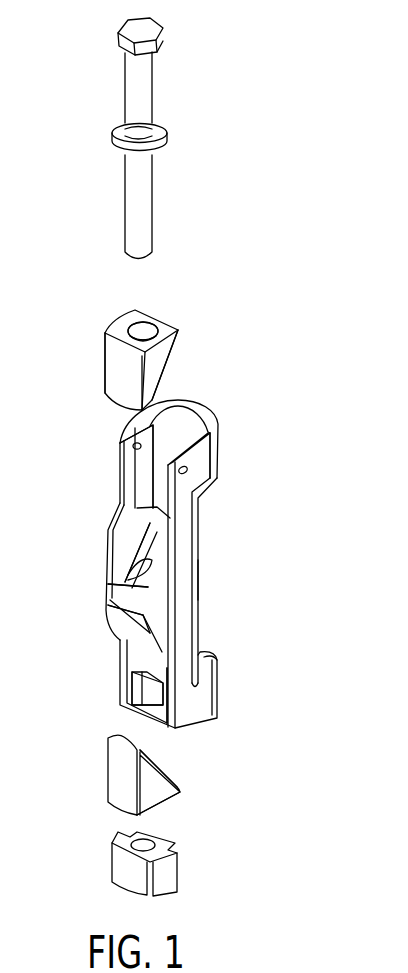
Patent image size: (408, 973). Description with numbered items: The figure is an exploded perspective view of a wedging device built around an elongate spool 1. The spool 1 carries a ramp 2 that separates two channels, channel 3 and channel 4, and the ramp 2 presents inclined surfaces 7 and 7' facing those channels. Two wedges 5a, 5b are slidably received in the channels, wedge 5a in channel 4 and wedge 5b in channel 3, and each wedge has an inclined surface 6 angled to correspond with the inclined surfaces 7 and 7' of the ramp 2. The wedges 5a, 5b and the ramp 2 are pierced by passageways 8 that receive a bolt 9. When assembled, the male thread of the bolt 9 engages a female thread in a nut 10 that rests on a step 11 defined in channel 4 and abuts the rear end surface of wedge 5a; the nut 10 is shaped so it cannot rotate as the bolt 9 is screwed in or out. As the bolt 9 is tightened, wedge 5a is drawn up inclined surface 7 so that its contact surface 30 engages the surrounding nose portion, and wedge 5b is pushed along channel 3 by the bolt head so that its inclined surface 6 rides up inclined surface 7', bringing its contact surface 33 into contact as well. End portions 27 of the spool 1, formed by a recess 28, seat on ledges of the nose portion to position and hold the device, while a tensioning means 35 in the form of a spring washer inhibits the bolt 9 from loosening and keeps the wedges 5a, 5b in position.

The spool 1 is at (183, 525).
The ramp 2 is at (118, 601).
The channel 3 is at (157, 468).
The channel 4 is at (155, 657).
The wedge 5a is at (165, 793).
The wedge 5b is at (113, 325).
The inclined surface 6 is at (166, 380).
The inclined surface 7 is at (110, 628).
The inclined surface 7' is at (113, 544).
The passageway 8 is at (150, 337).
The bolt 9 is at (140, 89).
The nut 10 is at (127, 874).
The step 11 is at (158, 690).
The end portion 27 is at (215, 445).
The recess 28 is at (205, 580).
The contact surface 30 is at (125, 778).
The contact surface 33 is at (112, 370).
The tensioning means 35 is at (167, 141).